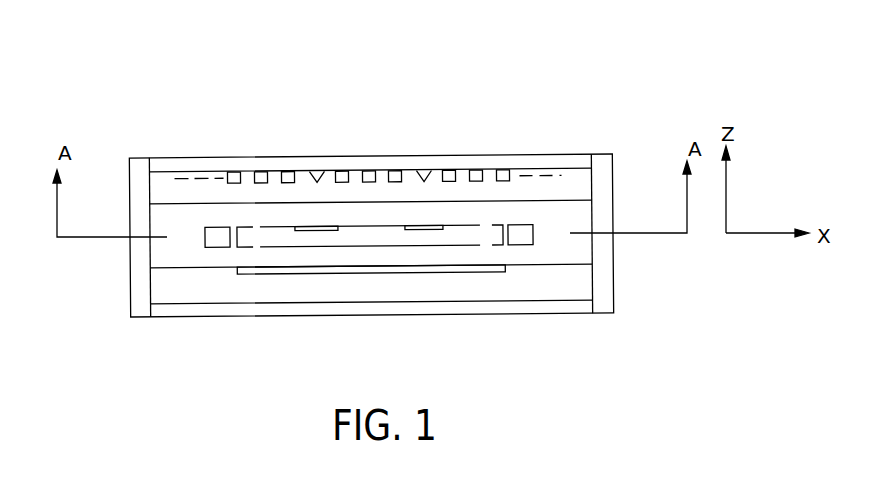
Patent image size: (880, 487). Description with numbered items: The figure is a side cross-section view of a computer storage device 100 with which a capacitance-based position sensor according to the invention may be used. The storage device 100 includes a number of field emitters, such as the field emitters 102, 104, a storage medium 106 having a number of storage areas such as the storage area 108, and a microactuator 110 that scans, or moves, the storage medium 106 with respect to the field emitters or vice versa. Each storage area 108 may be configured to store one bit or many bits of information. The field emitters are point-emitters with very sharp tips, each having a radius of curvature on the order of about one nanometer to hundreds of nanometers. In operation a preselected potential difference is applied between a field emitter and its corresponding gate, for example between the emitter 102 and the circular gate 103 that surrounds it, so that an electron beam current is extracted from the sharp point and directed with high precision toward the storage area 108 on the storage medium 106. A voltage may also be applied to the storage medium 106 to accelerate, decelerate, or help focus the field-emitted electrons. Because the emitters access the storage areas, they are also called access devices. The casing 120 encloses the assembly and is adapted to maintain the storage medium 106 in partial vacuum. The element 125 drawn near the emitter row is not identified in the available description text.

The storage device 100 is at (157, 72).
The field emitter 102 is at (370, 133).
The circular gate 103 is at (292, 172).
The field emitter 104 is at (368, 147).
The storage medium 106 is at (361, 242).
The storage area 108 is at (310, 228).
The microactuator 110 is at (470, 272).
The casing 120 is at (607, 277).
The sensor nozzle 125 is at (477, 132).